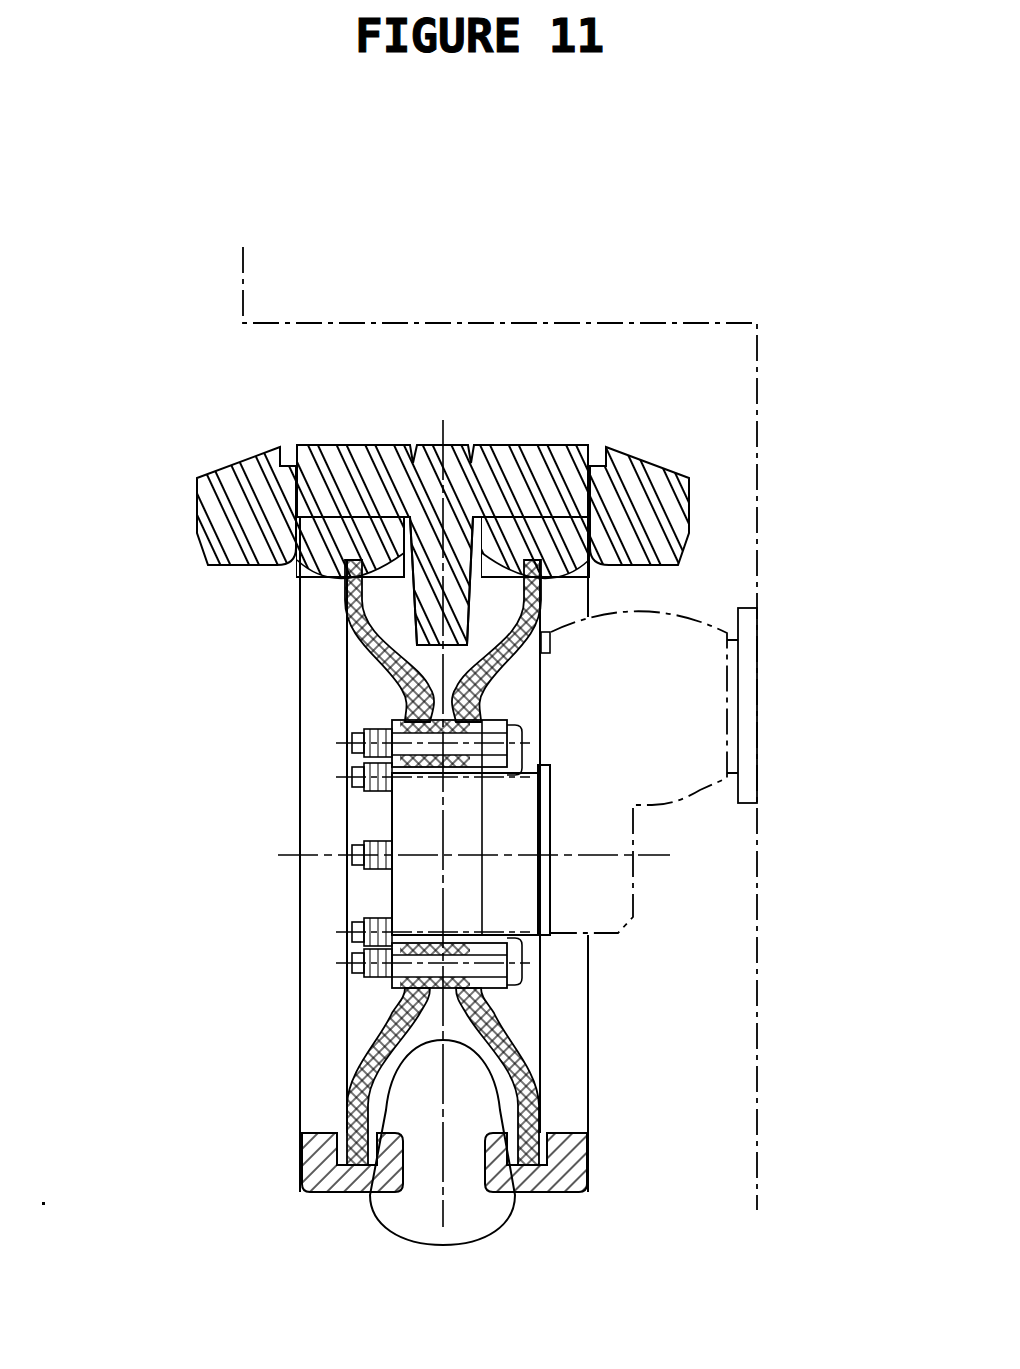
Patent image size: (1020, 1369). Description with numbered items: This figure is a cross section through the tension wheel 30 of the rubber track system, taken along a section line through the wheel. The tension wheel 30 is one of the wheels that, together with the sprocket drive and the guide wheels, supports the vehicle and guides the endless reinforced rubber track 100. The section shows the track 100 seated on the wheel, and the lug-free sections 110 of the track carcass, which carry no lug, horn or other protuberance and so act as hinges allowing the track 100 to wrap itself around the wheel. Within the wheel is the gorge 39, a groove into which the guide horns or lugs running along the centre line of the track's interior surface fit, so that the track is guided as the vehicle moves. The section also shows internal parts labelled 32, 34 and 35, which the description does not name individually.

The tension wheel 30 is at (302, 1068).
The first flexible member 32 is at (340, 593).
The second flexible member 34 is at (546, 592).
The central axis 35 is at (447, 1185).
The gorge 39 is at (388, 1218).
The endless reinforced rubber track 100 is at (240, 508).
The sections of the carcass 110 is at (648, 452).